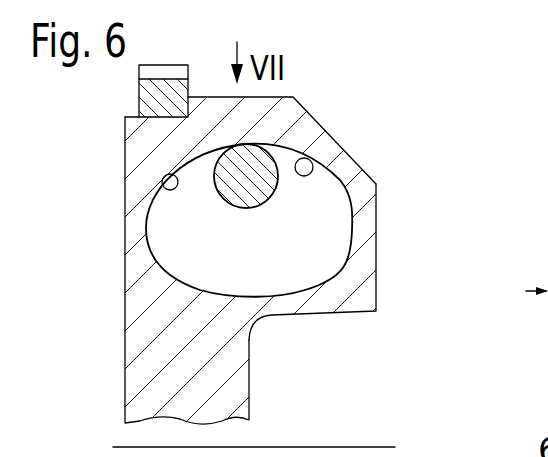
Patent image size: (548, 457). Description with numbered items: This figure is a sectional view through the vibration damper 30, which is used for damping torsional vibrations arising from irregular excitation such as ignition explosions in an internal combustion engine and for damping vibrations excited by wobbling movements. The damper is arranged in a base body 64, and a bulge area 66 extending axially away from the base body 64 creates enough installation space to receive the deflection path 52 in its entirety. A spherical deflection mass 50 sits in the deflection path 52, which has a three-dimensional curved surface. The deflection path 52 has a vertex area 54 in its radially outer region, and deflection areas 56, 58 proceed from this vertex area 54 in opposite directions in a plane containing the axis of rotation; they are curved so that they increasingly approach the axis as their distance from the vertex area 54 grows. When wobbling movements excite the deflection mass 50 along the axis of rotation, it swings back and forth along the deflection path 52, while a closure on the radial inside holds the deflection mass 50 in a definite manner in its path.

The vibration damper 30 is at (386, 145).
The deflection mass 50 is at (272, 218).
The deflection path 52 is at (283, 160).
The vertex area 54 is at (278, 126).
The deflection area 56 is at (345, 190).
The deflection area 58 is at (168, 186).
The base body 64 is at (125, 319).
The bulge area 66 is at (380, 271).